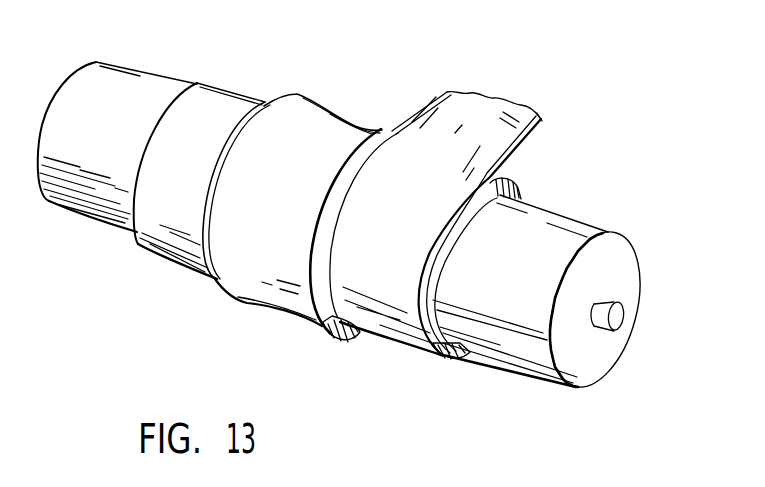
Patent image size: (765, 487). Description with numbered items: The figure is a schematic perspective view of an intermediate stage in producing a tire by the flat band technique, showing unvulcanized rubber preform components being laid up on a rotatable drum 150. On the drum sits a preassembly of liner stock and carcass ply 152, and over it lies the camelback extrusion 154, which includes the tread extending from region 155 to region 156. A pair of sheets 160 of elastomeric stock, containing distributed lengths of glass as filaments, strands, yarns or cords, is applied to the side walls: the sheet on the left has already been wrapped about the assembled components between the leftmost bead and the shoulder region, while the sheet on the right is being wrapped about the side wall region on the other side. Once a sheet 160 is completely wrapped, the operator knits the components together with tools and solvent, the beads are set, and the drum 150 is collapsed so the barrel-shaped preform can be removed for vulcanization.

The rotatable drum 150 is at (592, 220).
The preassembly of liner stock and carcass ply 152 is at (500, 188).
The camelback extrusion 154 is at (286, 189).
The region 155 is at (294, 93).
The region 156 is at (393, 130).
The sheets 160 is at (195, 165).